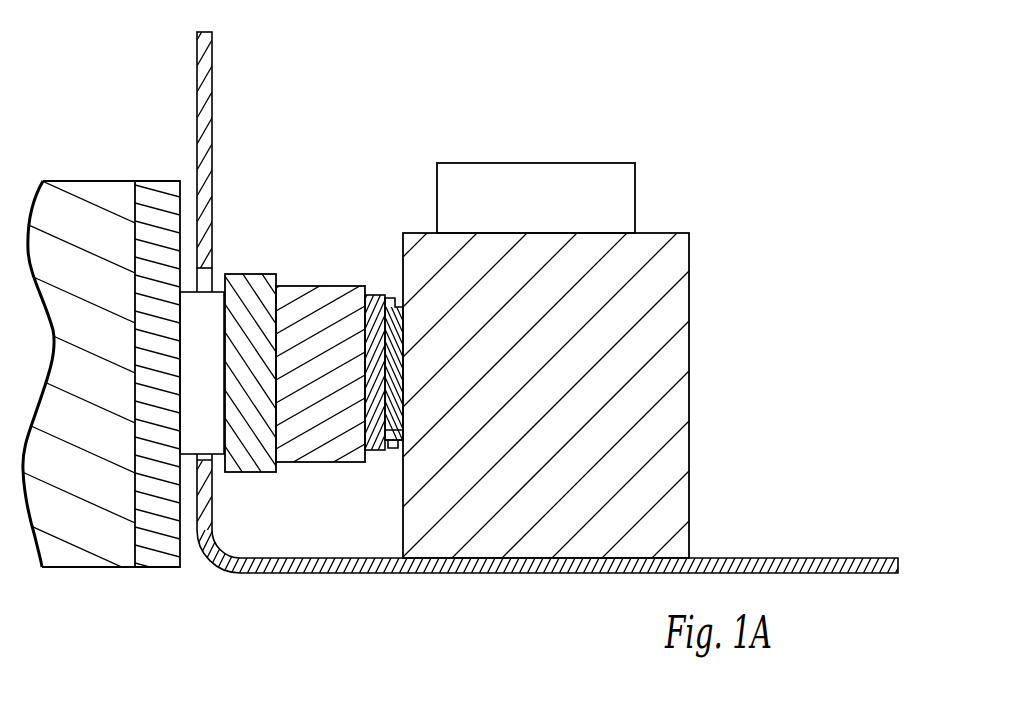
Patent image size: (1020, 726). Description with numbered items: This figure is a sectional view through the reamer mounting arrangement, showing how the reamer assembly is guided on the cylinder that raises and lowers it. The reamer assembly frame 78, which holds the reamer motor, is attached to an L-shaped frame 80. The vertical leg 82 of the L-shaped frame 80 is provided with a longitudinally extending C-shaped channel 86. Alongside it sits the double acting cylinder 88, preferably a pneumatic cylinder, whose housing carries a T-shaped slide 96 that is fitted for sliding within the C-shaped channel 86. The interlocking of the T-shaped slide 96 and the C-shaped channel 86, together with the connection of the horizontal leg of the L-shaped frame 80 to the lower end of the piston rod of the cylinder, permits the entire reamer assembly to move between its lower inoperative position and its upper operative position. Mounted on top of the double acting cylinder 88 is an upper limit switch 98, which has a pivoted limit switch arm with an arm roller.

The reamer assembly frame 78 is at (78, 190).
The L-shaped frame 80 is at (300, 289).
The vertical leg 82 is at (338, 285).
The C-shaped channel 86 is at (381, 295).
The double acting cylinder 88 is at (683, 282).
The T-shaped slide 96 is at (397, 442).
The upper limit switch 98 is at (545, 166).